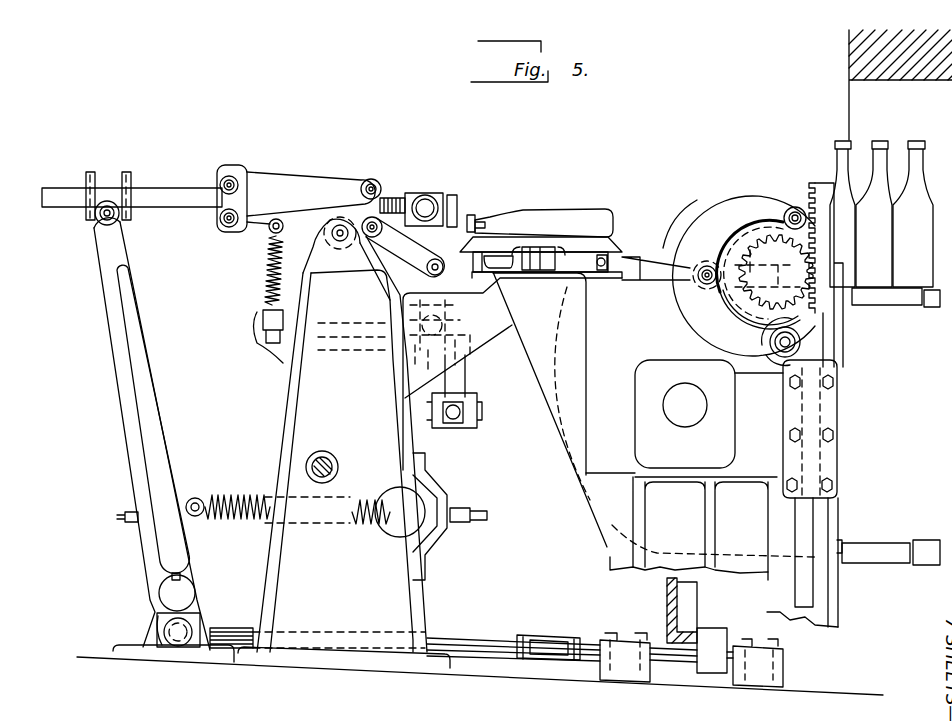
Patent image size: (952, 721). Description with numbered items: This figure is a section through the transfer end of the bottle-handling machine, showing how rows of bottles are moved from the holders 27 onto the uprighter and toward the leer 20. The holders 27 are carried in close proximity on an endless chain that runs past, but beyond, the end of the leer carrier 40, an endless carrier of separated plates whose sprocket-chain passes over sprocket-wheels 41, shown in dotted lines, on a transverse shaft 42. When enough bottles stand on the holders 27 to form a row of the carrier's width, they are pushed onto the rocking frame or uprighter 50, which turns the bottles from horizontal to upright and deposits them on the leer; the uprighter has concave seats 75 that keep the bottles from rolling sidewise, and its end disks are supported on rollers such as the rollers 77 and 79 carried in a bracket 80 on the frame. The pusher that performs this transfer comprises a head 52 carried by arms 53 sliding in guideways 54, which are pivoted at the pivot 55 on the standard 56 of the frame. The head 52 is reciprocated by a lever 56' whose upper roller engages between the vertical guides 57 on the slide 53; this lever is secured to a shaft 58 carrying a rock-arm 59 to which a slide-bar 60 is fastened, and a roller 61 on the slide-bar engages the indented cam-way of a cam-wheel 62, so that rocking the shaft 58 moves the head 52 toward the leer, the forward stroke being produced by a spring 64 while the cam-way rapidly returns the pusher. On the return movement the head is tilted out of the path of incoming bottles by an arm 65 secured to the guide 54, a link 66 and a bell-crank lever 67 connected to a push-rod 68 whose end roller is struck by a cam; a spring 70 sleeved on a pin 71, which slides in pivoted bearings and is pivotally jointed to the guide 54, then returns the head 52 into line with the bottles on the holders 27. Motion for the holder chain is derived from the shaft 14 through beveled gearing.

The shaft 14 is at (338, 467).
The leer 20 is at (900, 85).
The holders 27 is at (597, 250).
The endless carrier 40 is at (878, 545).
The sprocket-wheels 41 is at (557, 453).
The transverse shaft 42 is at (697, 418).
The rocking frame 50 is at (686, 214).
The head 52 is at (415, 195).
The arms 53 is at (167, 193).
The guideways 54 is at (305, 190).
The pivot 55 is at (341, 230).
The standard 56 is at (342, 435).
The lever 56' is at (152, 434).
The vertical guides 57 is at (125, 182).
The shaft 58 is at (193, 593).
The rock-arm 59 is at (165, 628).
The slide-bar 60 is at (228, 632).
The roller 61 is at (725, 645).
The cam-wheel 62 is at (667, 602).
The spring 64 is at (220, 495).
The arm 65 is at (403, 247).
The link 66 is at (450, 313).
The bell-crank lever 67 is at (462, 387).
The push-rod 68 is at (455, 427).
The spring 70 is at (272, 265).
The pin 71 is at (262, 340).
The concave seats 75 is at (712, 238).
The rollers 77 is at (801, 342).
The rollers 79 is at (702, 285).
The bracket 80 is at (744, 276).